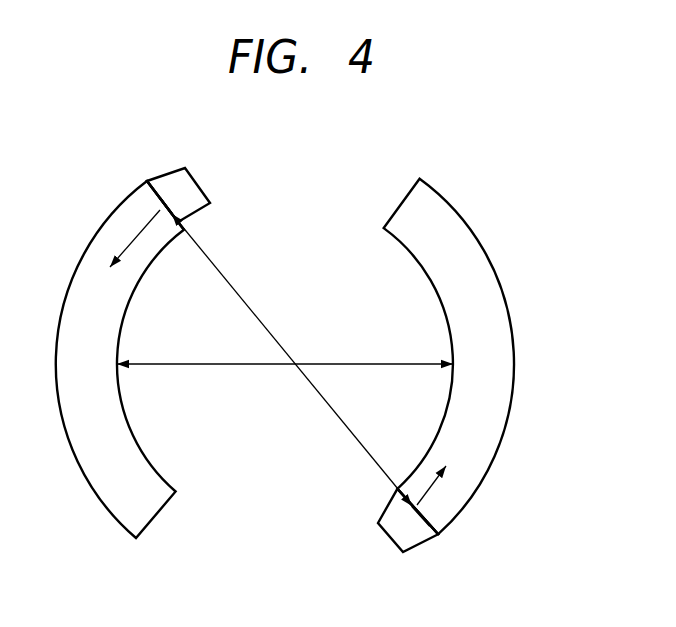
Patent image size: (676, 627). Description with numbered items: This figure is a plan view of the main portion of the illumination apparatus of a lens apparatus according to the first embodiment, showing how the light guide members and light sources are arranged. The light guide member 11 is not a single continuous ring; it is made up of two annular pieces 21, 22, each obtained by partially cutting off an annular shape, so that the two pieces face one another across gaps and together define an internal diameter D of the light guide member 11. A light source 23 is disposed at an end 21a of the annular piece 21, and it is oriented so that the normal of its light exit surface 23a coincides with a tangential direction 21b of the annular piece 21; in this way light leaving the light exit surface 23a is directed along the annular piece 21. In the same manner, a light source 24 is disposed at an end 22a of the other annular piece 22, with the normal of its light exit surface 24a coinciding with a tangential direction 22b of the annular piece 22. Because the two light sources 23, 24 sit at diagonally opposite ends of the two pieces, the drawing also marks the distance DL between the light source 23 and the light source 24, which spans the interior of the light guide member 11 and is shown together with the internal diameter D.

The light guide member 11 is at (448, 147).
The annular piece 21 is at (503, 393).
The annular piece 22 is at (117, 503).
The end of annular piece 21a is at (390, 502).
The end of annular piece 22a is at (151, 181).
The tangential direction of annular piece 21b is at (431, 493).
The tangential direction of annular piece 22b is at (137, 238).
The light source 23 is at (401, 531).
The light source 24 is at (190, 185).
The light exit surface 23a is at (428, 519).
The light exit surface 24a is at (163, 198).
The internal diameter D is at (285, 382).
The distance between light sources DL is at (292, 360).